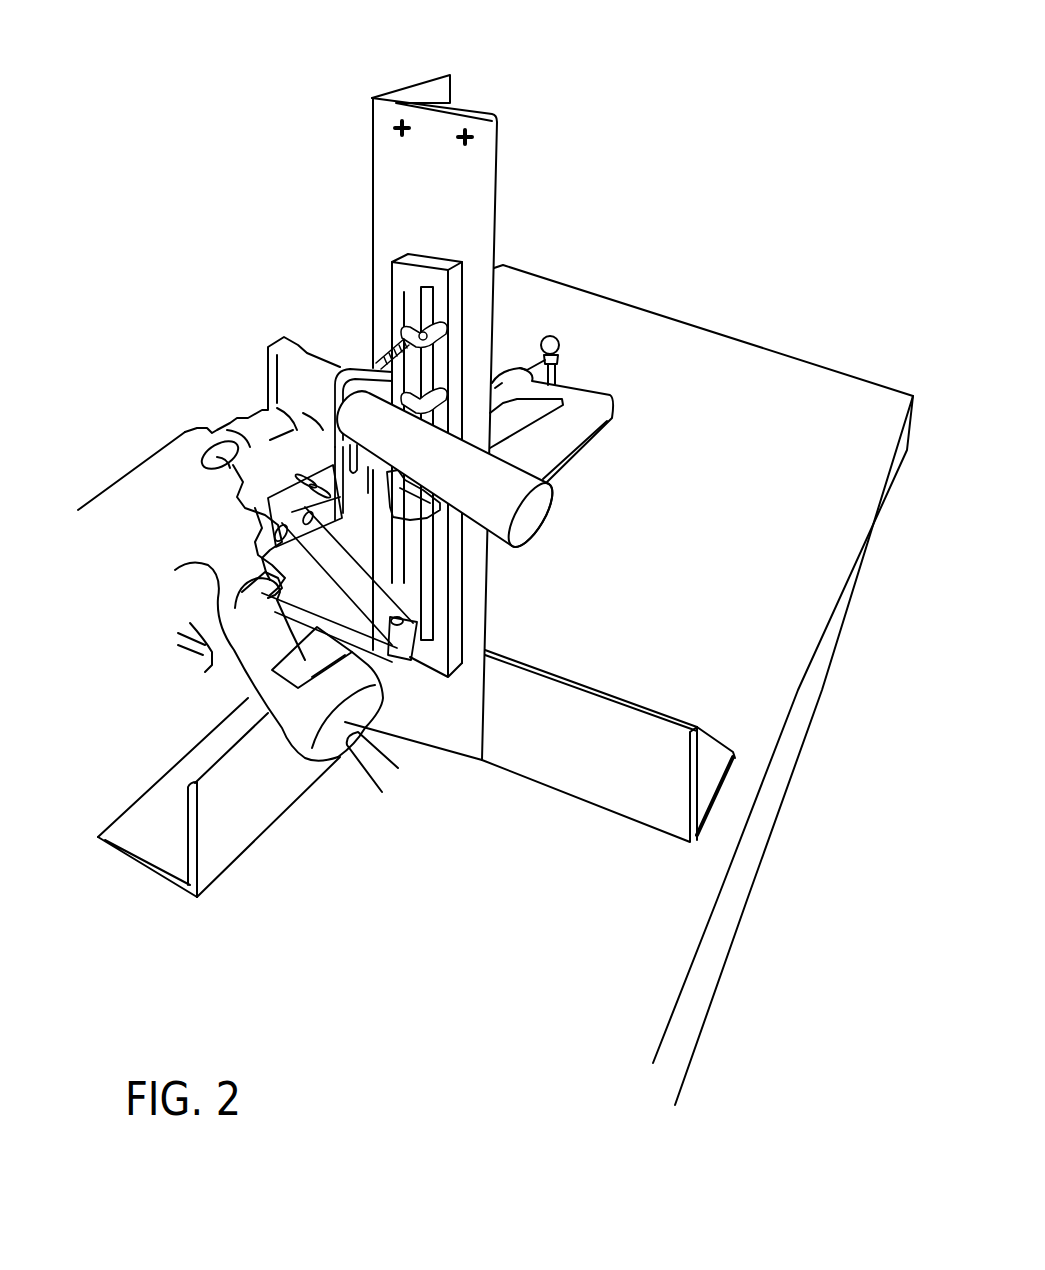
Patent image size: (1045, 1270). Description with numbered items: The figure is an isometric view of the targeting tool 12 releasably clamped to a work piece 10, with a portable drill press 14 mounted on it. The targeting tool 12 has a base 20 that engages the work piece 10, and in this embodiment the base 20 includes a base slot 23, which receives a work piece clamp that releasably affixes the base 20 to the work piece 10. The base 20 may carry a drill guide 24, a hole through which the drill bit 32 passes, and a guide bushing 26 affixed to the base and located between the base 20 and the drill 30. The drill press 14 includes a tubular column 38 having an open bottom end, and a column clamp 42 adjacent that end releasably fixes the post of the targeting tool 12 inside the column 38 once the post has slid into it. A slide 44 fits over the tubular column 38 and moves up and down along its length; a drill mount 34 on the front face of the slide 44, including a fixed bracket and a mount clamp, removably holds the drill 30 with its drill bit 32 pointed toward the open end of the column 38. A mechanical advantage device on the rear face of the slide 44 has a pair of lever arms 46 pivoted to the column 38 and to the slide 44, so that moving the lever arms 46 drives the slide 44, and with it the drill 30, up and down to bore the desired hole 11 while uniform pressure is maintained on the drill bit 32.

The work piece 10 is at (478, 170).
The desired hole 11 is at (405, 122).
The targeting tool 12 is at (509, 429).
The portable drill press 14 is at (263, 514).
The base 20 is at (485, 642).
The base slot 23 is at (433, 605).
The drill guide 24 is at (440, 330).
The guide bushing 26 is at (478, 366).
The drill 30 is at (300, 458).
The drill bit 32 is at (378, 345).
The drill mount 34 is at (247, 327).
The tubular column 38 is at (373, 467).
The column clamp 42 is at (423, 517).
The slide 44 is at (268, 503).
The pair of lever arms 46 is at (383, 641).